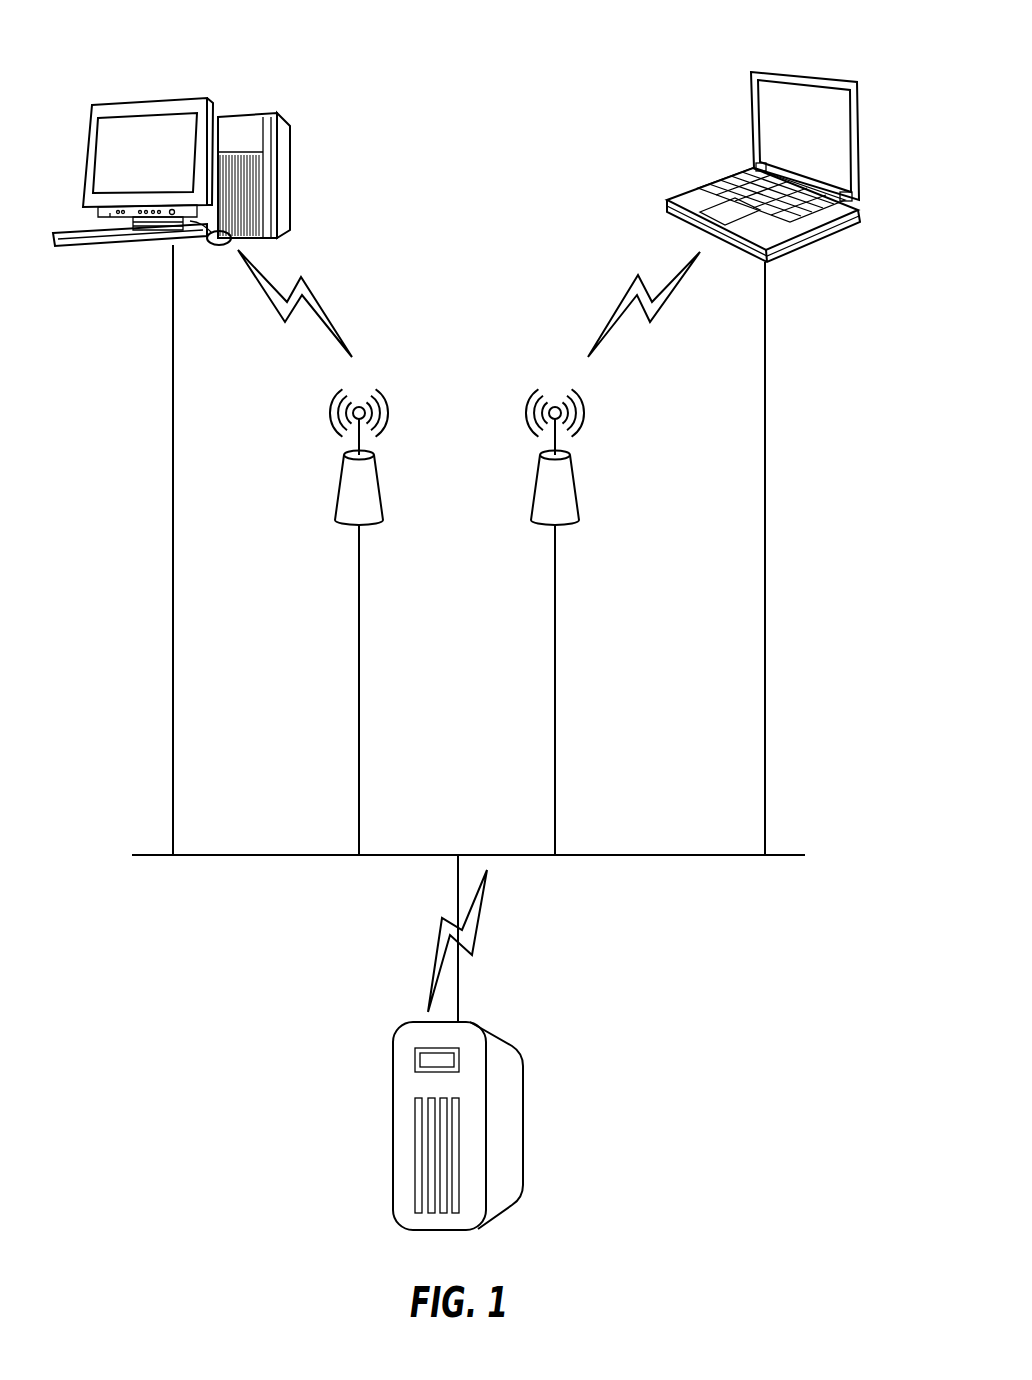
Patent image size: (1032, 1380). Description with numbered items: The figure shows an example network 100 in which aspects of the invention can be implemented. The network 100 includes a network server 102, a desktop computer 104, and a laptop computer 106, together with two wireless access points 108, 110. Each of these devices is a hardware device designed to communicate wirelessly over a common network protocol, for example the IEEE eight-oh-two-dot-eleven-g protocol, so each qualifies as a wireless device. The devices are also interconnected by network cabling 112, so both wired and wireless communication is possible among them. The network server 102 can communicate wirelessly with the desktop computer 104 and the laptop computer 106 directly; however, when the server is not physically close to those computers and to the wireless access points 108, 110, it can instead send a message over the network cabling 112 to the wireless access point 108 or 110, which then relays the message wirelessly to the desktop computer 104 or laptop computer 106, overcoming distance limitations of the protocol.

The network 100 is at (609, 97).
The network server 102 is at (523, 1128).
The desktop computer 104 is at (148, 102).
The laptop computer 106 is at (807, 77).
The wireless access point 108 is at (383, 488).
The wireless access point 110 is at (579, 488).
The network cabling 112 is at (173, 508).